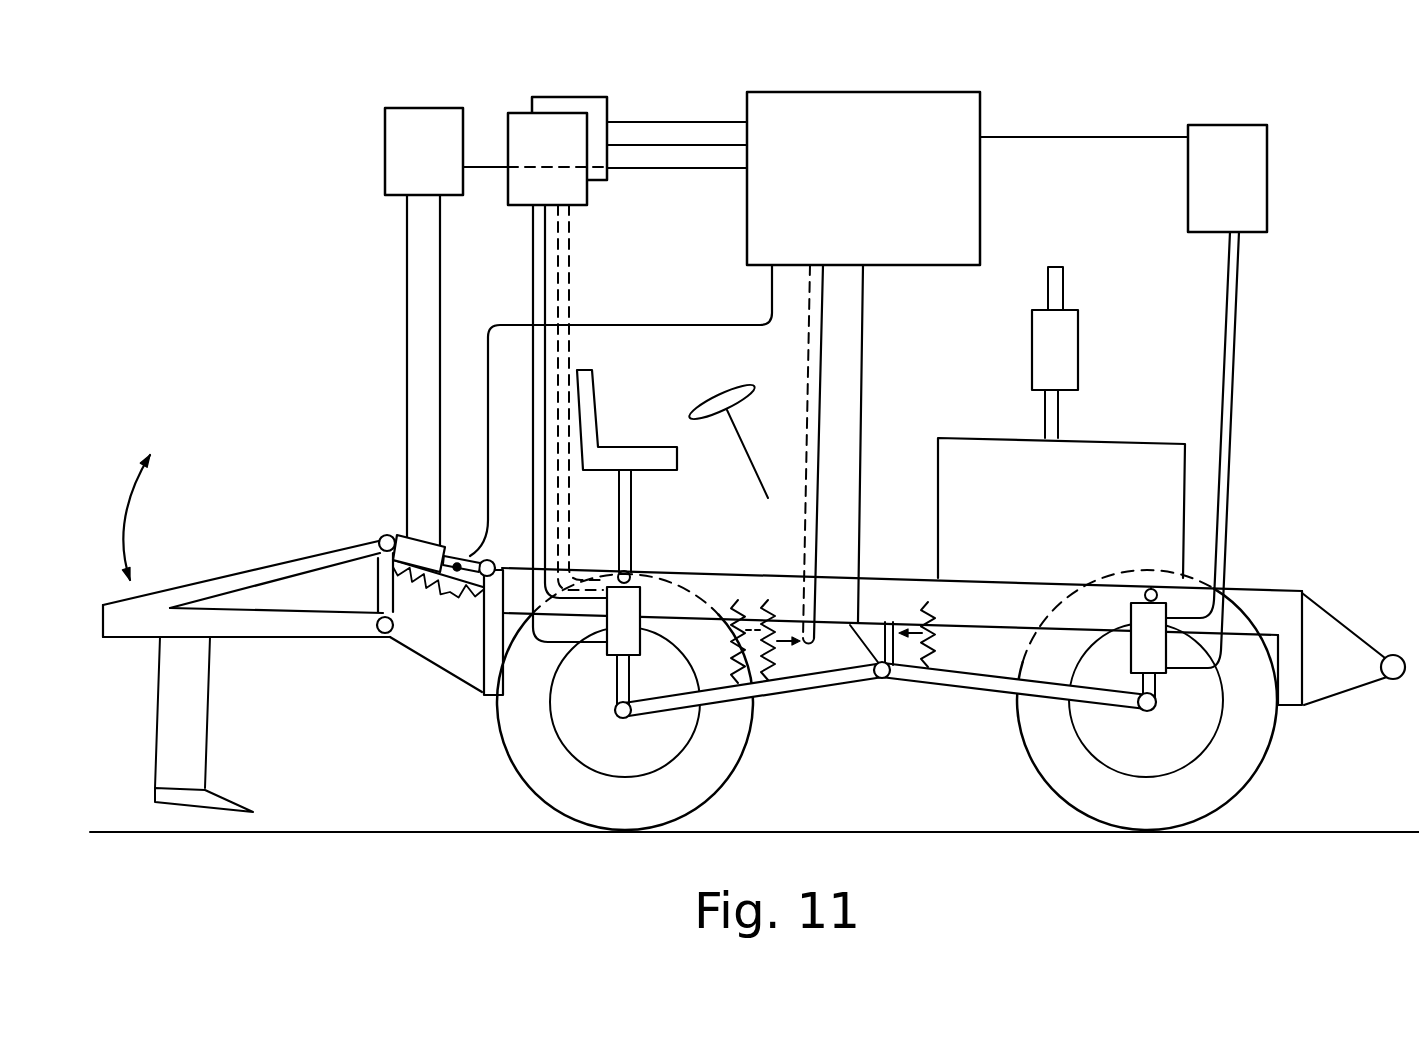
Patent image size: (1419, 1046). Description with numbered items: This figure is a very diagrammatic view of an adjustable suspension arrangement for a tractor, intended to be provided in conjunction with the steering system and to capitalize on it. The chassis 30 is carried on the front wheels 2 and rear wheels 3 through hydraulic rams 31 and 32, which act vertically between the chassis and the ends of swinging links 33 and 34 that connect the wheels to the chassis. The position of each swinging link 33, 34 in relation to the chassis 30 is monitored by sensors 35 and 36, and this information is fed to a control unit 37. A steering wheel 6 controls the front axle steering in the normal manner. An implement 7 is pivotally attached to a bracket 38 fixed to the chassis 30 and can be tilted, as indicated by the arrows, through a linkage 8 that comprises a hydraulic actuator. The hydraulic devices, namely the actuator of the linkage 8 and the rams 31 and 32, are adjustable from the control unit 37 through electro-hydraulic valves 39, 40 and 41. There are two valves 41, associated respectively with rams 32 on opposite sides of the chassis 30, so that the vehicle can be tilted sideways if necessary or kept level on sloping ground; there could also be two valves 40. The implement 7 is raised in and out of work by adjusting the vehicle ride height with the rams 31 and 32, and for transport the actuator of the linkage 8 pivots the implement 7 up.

The front wheels 2 is at (1225, 767).
The rear wheels 3 is at (703, 770).
The steering wheel 6 is at (700, 405).
The implement 7 is at (272, 573).
The linkage 8 is at (477, 547).
The chassis 30 is at (893, 593).
The hydraulic ram 31 is at (1153, 648).
The hydraulic ram 32 is at (620, 628).
The swinging link 33 is at (1005, 690).
The swinging link 34 is at (760, 688).
The sensor 35 is at (893, 680).
The sensor 36 is at (813, 683).
The control unit 37 is at (950, 108).
The bracket 38 is at (437, 640).
The electro-hydraulic valve 39 is at (385, 150).
The electro-hydraulic valve 40 is at (1250, 155).
The electro-hydraulic valve 41 is at (570, 122).